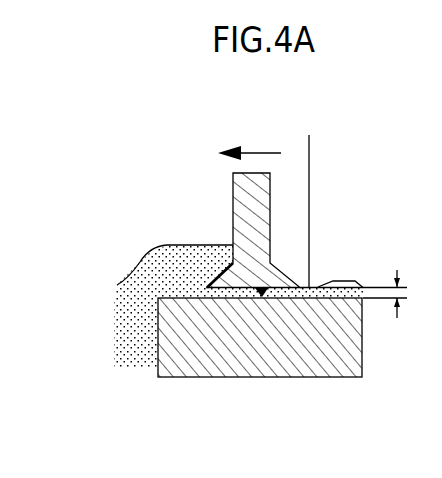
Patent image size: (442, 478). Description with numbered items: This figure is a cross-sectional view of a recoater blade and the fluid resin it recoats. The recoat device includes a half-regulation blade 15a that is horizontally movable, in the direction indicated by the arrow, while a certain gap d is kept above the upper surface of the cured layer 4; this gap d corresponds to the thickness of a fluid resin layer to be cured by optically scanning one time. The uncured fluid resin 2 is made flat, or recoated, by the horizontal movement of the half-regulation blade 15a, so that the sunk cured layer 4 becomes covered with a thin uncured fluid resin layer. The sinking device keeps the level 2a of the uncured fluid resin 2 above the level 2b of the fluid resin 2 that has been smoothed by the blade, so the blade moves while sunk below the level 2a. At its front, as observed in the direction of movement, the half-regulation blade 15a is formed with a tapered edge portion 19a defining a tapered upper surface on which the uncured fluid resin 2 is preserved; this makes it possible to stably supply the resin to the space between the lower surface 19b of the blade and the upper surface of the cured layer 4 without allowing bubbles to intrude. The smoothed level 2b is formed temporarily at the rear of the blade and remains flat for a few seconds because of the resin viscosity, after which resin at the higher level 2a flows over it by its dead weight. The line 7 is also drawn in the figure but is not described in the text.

The uncured fluid resin 2 is at (182, 253).
The level of the uncured fluid resin 2a is at (118, 276).
The level of the smoothed fluid resin 2b is at (323, 280).
The cured layer 4 is at (337, 353).
The reference line 7 is at (310, 173).
The half-regulation blade 15a is at (248, 212).
The tapered edge portion 19a is at (223, 283).
The lower surface of the recoater blade 19b is at (262, 292).
The gap d is at (396, 294).